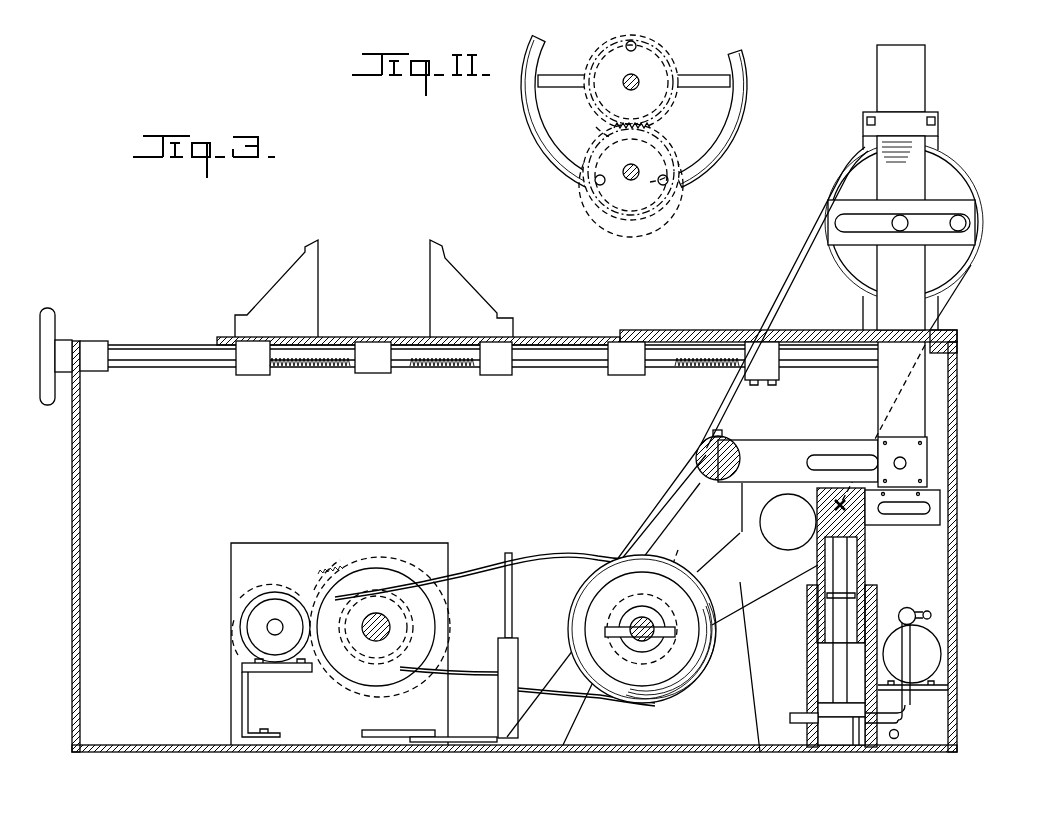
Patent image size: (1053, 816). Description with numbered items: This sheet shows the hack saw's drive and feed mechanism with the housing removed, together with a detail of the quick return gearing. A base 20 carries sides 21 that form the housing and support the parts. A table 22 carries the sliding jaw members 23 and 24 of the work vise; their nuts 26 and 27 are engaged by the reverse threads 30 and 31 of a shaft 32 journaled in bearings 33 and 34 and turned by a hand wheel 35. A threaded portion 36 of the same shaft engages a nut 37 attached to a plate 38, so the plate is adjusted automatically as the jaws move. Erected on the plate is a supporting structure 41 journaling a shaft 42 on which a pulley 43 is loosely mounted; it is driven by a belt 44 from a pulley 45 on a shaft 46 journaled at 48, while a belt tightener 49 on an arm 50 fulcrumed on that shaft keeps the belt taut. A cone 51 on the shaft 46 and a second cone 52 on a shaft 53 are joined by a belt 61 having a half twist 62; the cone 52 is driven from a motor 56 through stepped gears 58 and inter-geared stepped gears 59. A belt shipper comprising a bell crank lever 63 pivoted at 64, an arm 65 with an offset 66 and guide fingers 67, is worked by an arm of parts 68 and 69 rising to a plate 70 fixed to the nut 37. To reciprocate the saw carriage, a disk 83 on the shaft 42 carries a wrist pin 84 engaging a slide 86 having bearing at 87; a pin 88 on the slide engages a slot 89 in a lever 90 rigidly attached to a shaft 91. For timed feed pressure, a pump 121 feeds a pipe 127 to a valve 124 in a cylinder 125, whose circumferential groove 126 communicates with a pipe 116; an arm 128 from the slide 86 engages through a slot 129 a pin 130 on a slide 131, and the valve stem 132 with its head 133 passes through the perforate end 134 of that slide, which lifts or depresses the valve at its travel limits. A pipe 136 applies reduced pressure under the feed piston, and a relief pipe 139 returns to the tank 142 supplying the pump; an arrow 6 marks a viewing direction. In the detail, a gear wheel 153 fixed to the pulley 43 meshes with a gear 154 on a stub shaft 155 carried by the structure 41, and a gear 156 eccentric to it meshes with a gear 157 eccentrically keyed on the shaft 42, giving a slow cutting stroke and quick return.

In FIG. 3, the direction arrow 6 is at (980, 565).
In FIG. 3, the base 20 is at (178, 752).
In FIG. 3, the sides 21 is at (72, 480).
In FIG. 3, the table 22 is at (540, 342).
In FIG. 3, the jaw member 23 is at (283, 290).
In FIG. 3, the jaw member 24 is at (445, 278).
In FIG. 3, the nut 26 is at (252, 375).
In FIG. 3, the nut 27 is at (495, 376).
In FIG. 3, the reverse thread 30 is at (305, 368).
In FIG. 3, the reverse thread 31 is at (452, 367).
In FIG. 3, the shaft 32 is at (172, 367).
In FIG. 3, the bearing 33 is at (375, 350).
In FIG. 3, the bearing 34 is at (628, 376).
In FIG. 3, the hand wheel 35 is at (42, 354).
In FIG. 3, the threaded portion 36 is at (703, 355).
In FIG. 3, the nut 37 is at (780, 378).
In FIG. 3, the plate 38 is at (728, 330).
In FIG. 3, the supporting structure 41 is at (930, 306).
In FIG. 11, the shaft 42 is at (637, 85).
In FIG. 3, the shaft 42 is at (905, 222).
In FIG. 11, the pulley 43 is at (522, 100).
In FIG. 3, the pulley 43 is at (943, 155).
In FIG. 3, the belt 44 is at (782, 285).
In FIG. 3, the pulley 45 is at (633, 617).
In FIG. 3, the shaft 46 is at (632, 620).
In FIG. 3, the journal 48 is at (653, 645).
In FIG. 3, the belt tightener 49 is at (779, 503).
In FIG. 3, the arm 50 is at (722, 555).
In FIG. 3, the cone 51 is at (592, 585).
In FIG. 3, the cone 52 is at (385, 580).
In FIG. 3, the shaft 53 is at (380, 620).
In FIG. 3, the motor 56 is at (280, 575).
In FIG. 3, the stepped gears 58 is at (278, 612).
In FIG. 3, the stepped gears 59 is at (333, 572).
In FIG. 3, the belt 61 is at (460, 672).
In FIG. 3, the half twist 62 is at (530, 565).
In FIG. 3, the bell crank lever 63 is at (390, 735).
In FIG. 3, the pivot 64 is at (420, 730).
In FIG. 3, the arm 65 is at (510, 650).
In FIG. 3, the offset 66 is at (510, 648).
In FIG. 3, the guide fingers 67 is at (510, 553).
In FIG. 3, the arm part 68 is at (447, 742).
In FIG. 3, the arm part 69 is at (660, 497).
In FIG. 3, the plate 70 is at (764, 384).
In FIG. 3, the disk 83 is at (950, 260).
In FIG. 3, the wrist pin 84 is at (962, 222).
In FIG. 3, the slide 86 is at (912, 66).
In FIG. 3, the bearing 87 is at (915, 117).
In FIG. 3, the pin 88 is at (906, 462).
In FIG. 3, the slot 89 is at (840, 455).
In FIG. 3, the lever 90 is at (800, 442).
In FIG. 3, the shaft 91 is at (700, 446).
In FIG. 3, the pipe 116 is at (800, 716).
In FIG. 3, the pump 121 is at (924, 656).
In FIG. 3, the valve 124 is at (843, 742).
In FIG. 3, the cylinder 125 is at (808, 660).
In FIG. 3, the circumferential groove 126 is at (805, 745).
In FIG. 3, the pipe 127 is at (906, 722).
In FIG. 3, the arm 128 is at (918, 522).
In FIG. 3, the slot 129 is at (888, 505).
In FIG. 3, the pin 130 is at (825, 505).
In FIG. 3, the slide 131 is at (870, 575).
In FIG. 3, the stem 132 is at (845, 620).
In FIG. 3, the head 133 is at (823, 597).
In FIG. 3, the perforate end 134 is at (817, 615).
In FIG. 3, the pipe 136 is at (931, 615).
In FIG. 3, the relief pipe 139 is at (894, 740).
In FIG. 3, the tank 142 is at (935, 710).
In FIG. 11, the gear wheel 153 is at (650, 60).
In FIG. 11, the gear 154 is at (665, 133).
In FIG. 11, the stub shaft 155 is at (634, 180).
In FIG. 11, the gear 156 is at (683, 178).
In FIG. 11, the gear 157 is at (598, 128).